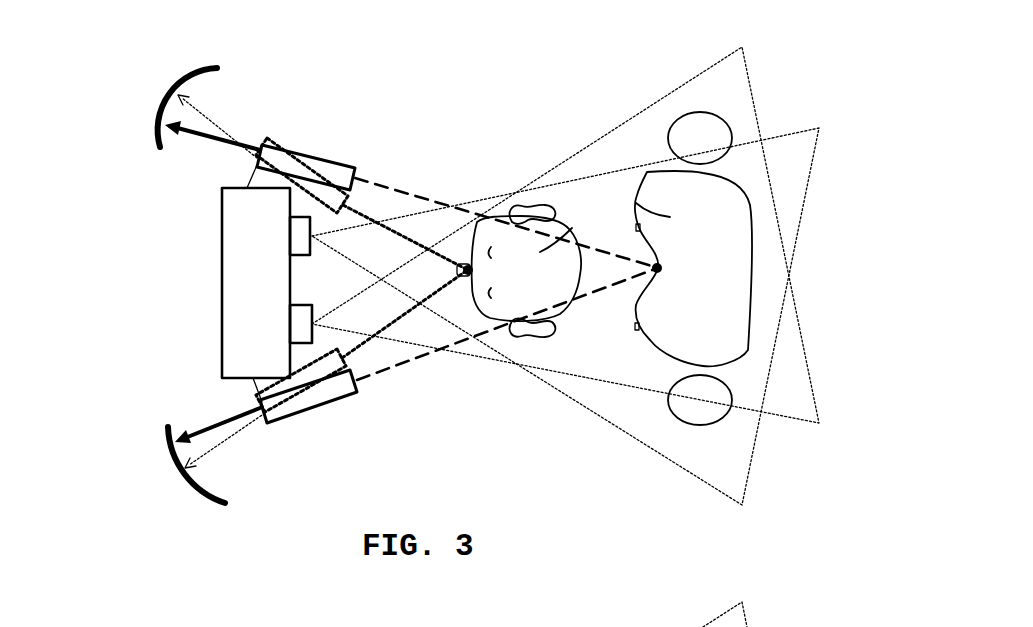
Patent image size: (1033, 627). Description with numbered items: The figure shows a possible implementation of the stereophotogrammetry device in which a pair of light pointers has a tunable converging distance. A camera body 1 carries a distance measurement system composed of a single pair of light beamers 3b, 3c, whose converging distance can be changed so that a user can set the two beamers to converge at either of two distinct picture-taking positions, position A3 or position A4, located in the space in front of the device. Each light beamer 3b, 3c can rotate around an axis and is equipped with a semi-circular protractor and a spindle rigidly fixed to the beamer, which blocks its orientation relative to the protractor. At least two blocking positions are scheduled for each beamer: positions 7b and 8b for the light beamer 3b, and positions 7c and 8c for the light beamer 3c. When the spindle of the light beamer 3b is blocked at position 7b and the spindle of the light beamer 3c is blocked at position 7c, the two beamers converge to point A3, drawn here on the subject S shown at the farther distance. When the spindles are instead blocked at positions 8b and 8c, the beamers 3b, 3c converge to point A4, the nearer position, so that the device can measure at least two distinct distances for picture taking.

The camera body 1 is at (230, 308).
The light beamer 3b is at (343, 170).
The light beamer 3c is at (332, 390).
The blocking position 7b is at (158, 126).
The blocking position 7c is at (167, 440).
The blocking position 8b is at (170, 92).
The blocking position 8c is at (188, 477).
The position A3 is at (655, 272).
The position A4 is at (462, 266).
The subject S is at (645, 213).